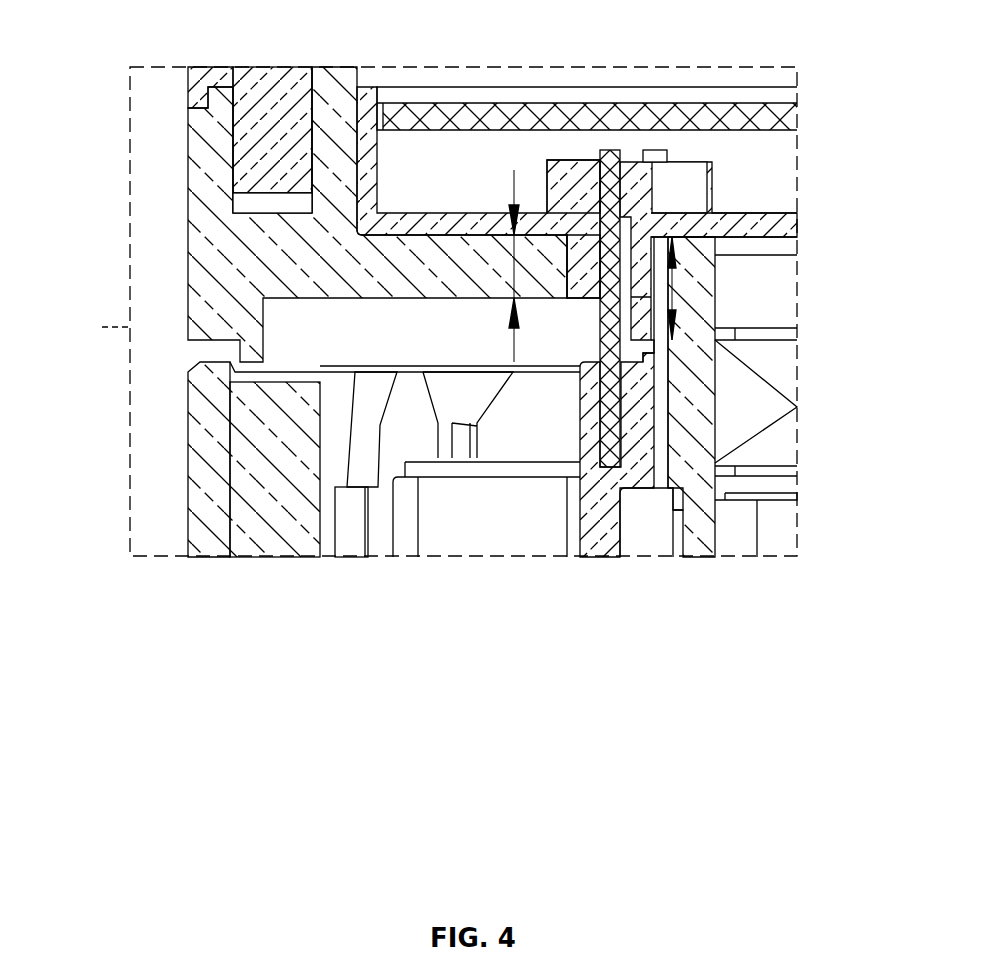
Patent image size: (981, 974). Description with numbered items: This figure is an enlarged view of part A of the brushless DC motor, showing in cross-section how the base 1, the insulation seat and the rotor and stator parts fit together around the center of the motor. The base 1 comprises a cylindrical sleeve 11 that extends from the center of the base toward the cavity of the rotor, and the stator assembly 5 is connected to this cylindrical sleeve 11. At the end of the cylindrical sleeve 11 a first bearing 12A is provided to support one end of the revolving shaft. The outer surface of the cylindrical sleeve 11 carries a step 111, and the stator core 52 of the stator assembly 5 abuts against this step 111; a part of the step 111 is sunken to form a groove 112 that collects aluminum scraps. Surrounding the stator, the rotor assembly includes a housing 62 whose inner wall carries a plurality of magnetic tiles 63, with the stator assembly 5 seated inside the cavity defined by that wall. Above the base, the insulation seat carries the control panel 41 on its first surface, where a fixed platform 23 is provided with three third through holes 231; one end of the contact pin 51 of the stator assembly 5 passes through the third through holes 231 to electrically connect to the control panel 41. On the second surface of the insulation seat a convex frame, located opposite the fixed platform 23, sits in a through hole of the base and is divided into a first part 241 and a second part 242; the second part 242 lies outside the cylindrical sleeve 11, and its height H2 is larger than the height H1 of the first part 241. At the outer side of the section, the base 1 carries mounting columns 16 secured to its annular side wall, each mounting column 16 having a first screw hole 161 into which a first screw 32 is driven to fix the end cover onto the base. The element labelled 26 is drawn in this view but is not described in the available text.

The base 1 is at (222, 276).
The first screw 32 is at (267, 100).
The mounting column 16 is at (312, 86).
The first screw hole 161 is at (250, 207).
The side wall 26 is at (362, 135).
The third through hole 231 is at (598, 192).
The first part 241 is at (550, 268).
The control panel 41 is at (740, 123).
The contact pin 51 is at (604, 183).
The fixed platform 23 is at (640, 180).
The second part 242 is at (680, 237).
The cylindrical sleeve 11 is at (700, 410).
The first bearing 12A is at (763, 377).
The stator assembly 5 is at (722, 490).
The step 111 is at (642, 417).
The stator core 52 is at (627, 528).
The groove 112 is at (676, 513).
The housing 62 is at (212, 403).
The magnetic tile 63 is at (272, 427).
The height of the first part H1 is at (487, 266).
The height of the second part H2 is at (673, 277).
The part A is at (100, 324).